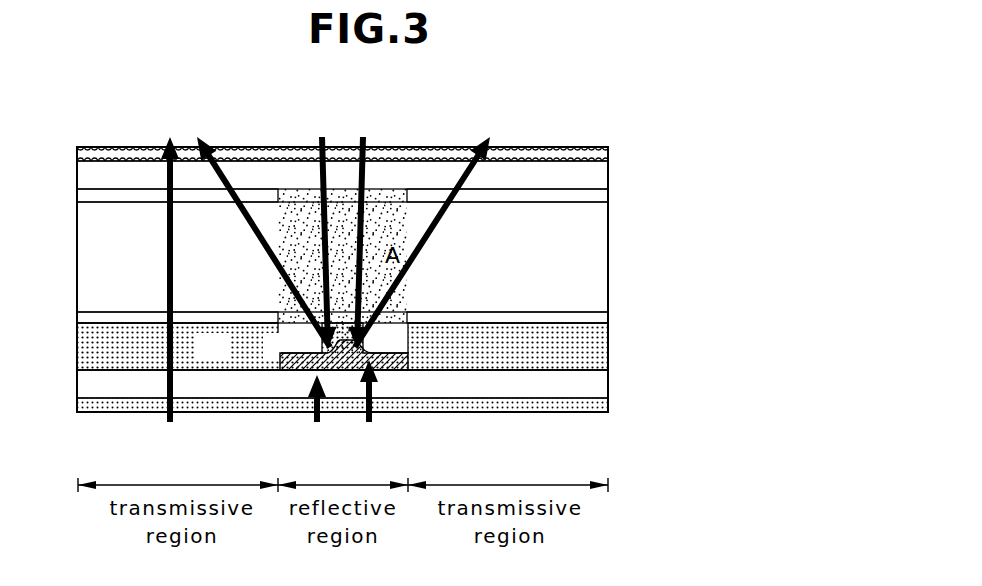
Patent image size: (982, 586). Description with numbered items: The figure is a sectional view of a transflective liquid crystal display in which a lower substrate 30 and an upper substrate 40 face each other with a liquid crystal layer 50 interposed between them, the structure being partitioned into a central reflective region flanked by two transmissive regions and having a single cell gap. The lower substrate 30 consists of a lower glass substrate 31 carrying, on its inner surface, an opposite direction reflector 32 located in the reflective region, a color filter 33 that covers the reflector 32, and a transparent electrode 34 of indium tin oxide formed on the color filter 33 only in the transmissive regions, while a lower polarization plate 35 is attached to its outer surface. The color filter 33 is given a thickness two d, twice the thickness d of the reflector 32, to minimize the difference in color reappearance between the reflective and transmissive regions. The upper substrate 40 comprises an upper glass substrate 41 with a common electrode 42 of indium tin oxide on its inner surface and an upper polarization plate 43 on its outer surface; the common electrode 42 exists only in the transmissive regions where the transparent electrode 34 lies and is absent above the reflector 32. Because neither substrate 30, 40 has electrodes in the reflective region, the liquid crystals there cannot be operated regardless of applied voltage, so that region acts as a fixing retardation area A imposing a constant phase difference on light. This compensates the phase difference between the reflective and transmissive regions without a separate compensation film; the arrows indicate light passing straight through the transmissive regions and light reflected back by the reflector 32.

The lower substrate 30 is at (406, 381).
The lower glass substrate 31 is at (608, 381).
The opposite direction reflector 32 is at (336, 372).
The color filter 33 is at (608, 347).
The transparent electrode 34 is at (608, 316).
The lower polarization plate 35 is at (380, 407).
The upper substrate 40 is at (406, 176).
The upper glass substrate 41 is at (608, 174).
The common electrode 42 is at (380, 198).
The upper polarization plate 43 is at (608, 152).
The liquid crystal layer 50 is at (608, 252).